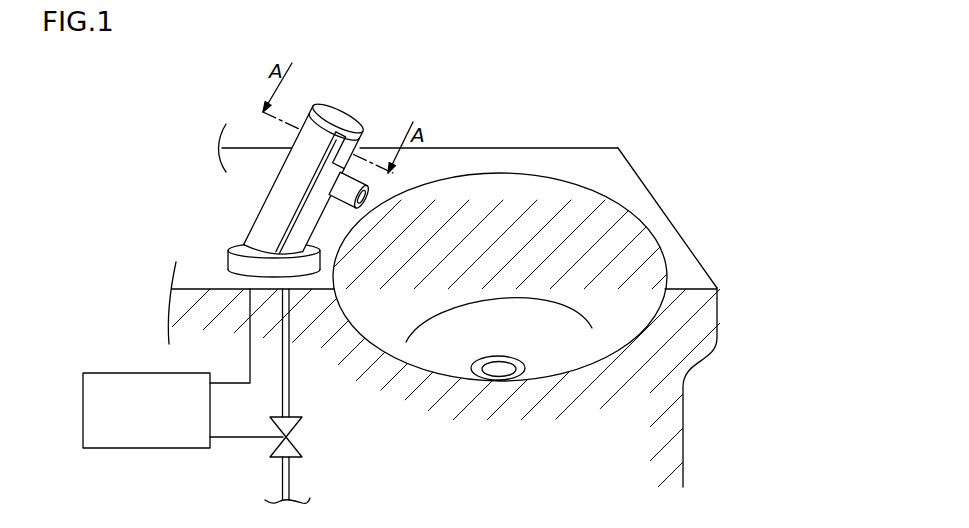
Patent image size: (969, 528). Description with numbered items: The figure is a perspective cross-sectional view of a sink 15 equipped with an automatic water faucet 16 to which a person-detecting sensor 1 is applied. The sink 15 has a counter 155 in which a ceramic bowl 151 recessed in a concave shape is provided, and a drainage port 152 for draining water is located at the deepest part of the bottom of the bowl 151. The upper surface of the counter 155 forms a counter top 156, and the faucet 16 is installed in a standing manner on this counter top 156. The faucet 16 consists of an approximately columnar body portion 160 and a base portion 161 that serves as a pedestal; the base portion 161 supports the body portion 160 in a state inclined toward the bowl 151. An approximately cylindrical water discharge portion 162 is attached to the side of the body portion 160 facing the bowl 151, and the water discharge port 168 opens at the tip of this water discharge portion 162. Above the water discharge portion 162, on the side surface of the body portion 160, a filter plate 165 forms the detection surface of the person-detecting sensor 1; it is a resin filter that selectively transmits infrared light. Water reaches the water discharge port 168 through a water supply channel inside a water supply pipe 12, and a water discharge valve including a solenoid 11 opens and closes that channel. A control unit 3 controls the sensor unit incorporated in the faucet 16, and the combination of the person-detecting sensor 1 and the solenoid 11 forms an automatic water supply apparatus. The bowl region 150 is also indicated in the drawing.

The person-detecting sensor 1 is at (183, 115).
The control unit 3 is at (112, 440).
The solenoid 11 is at (293, 447).
The water supply pipe 12 is at (283, 472).
The sink 15 is at (567, 142).
The faucet 16 is at (347, 107).
The bowl 150 is at (610, 283).
The bowl 151 is at (497, 228).
The drainage port 152 is at (505, 352).
The counter 155 is at (655, 192).
The counter top 156 is at (595, 168).
The body portion 160 is at (292, 183).
The base portion 161 is at (227, 250).
The water discharge portion 162 is at (343, 208).
The filter plate 165 is at (372, 135).
The water discharge port 168 is at (385, 203).